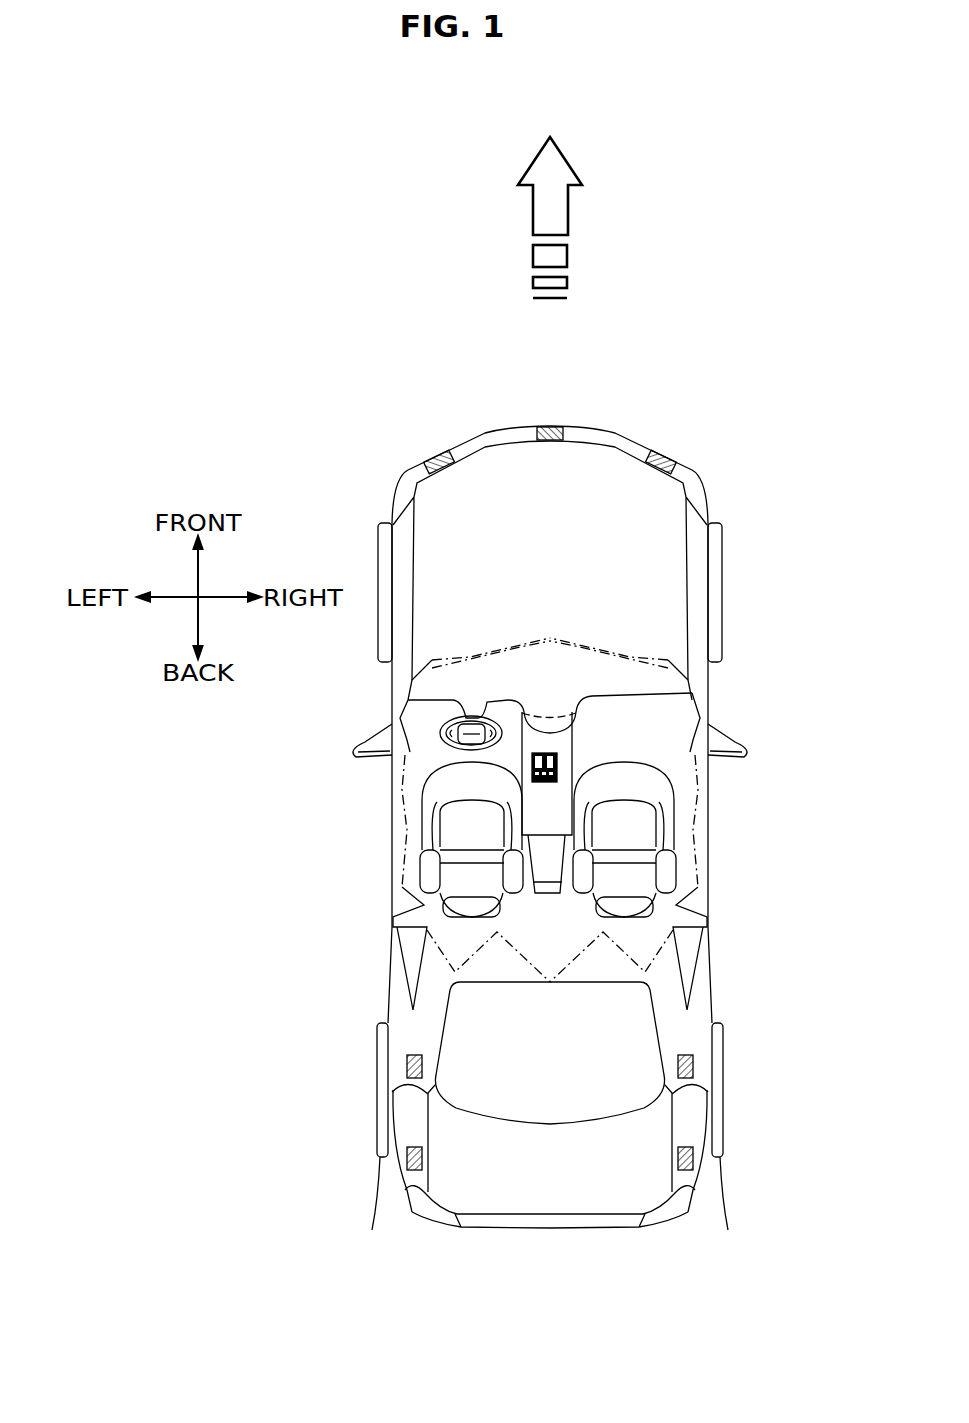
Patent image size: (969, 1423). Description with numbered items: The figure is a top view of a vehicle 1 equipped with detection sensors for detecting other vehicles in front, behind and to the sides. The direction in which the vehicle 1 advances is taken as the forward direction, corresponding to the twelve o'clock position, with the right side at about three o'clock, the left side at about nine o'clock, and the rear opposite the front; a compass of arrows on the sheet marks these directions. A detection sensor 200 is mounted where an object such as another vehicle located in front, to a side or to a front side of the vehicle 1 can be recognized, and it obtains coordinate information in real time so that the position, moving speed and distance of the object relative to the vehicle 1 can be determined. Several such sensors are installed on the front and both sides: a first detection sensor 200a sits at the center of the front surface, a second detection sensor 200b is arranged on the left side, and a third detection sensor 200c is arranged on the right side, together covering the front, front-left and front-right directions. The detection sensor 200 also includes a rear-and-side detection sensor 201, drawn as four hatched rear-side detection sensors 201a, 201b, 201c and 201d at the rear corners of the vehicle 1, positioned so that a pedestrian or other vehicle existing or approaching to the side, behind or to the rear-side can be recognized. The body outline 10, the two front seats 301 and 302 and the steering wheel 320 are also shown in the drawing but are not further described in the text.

The vehicle 1 is at (350, 250).
The vehicle body 10 is at (386, 438).
The detection sensor 200 is at (662, 371).
The first detection sensor 200a is at (551, 428).
The second detection sensor 200b is at (437, 454).
The third detection sensor 200c is at (661, 455).
The rear-and-side detection sensor 201 is at (730, 1293).
The rear-side detection sensor 201a is at (372, 1228).
The rear-side detection sensor 201b is at (412, 1212).
The rear-side detection sensor 201c is at (728, 1228).
The rear-side detection sensor 201d is at (688, 1212).
The driver seat 301 is at (425, 860).
The passenger seat 302 is at (668, 860).
The steering wheel 320 is at (440, 749).